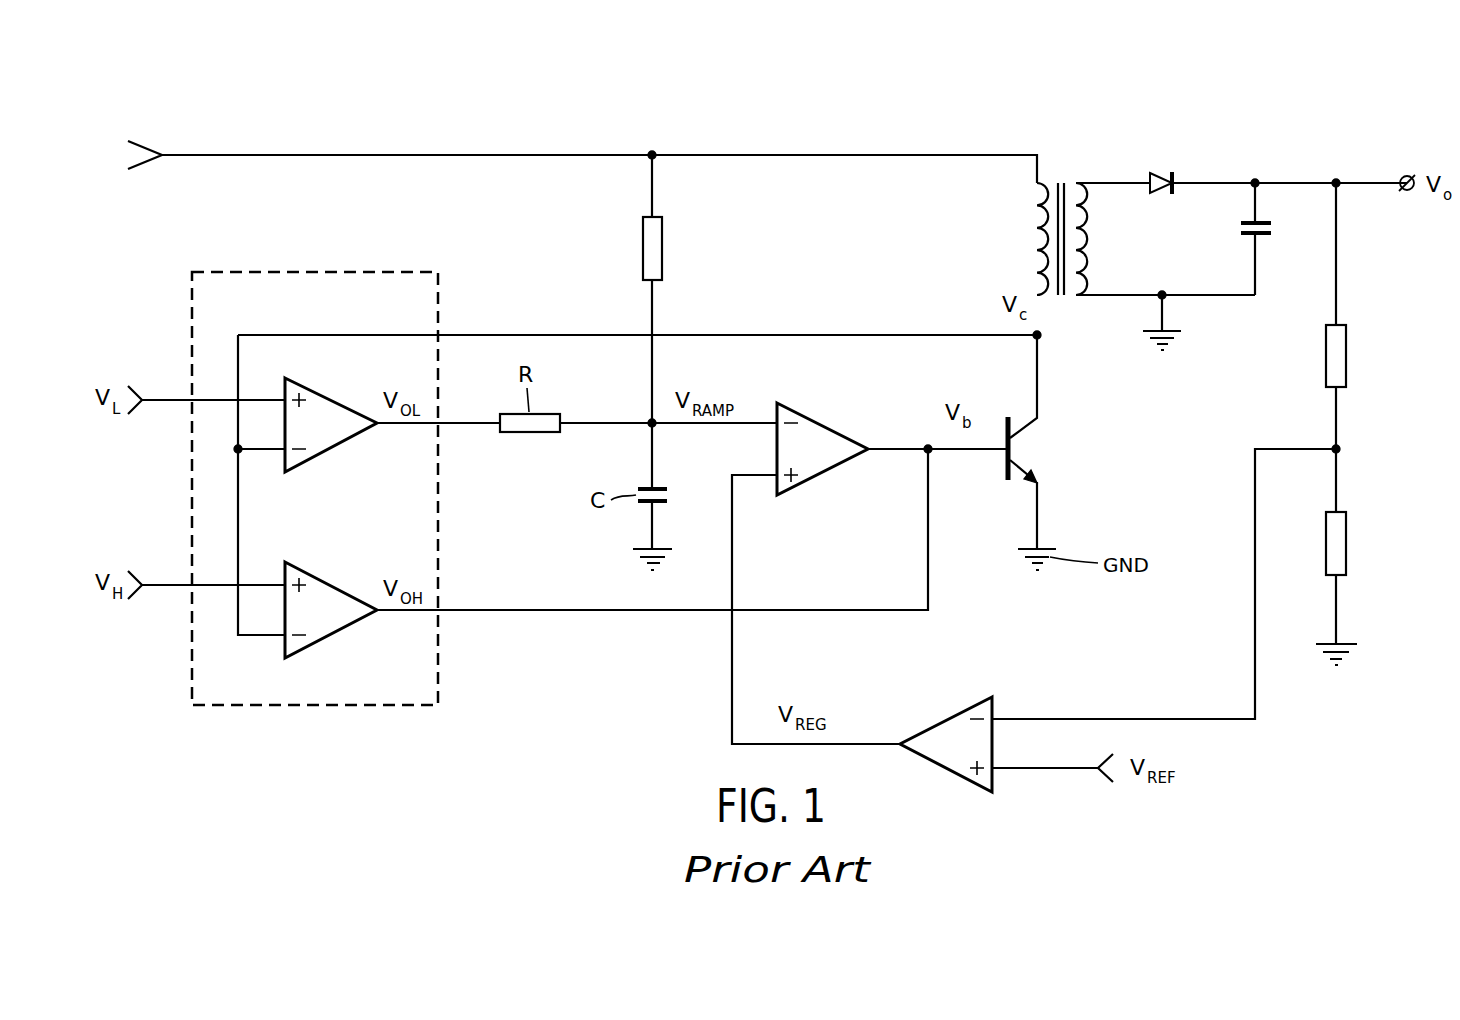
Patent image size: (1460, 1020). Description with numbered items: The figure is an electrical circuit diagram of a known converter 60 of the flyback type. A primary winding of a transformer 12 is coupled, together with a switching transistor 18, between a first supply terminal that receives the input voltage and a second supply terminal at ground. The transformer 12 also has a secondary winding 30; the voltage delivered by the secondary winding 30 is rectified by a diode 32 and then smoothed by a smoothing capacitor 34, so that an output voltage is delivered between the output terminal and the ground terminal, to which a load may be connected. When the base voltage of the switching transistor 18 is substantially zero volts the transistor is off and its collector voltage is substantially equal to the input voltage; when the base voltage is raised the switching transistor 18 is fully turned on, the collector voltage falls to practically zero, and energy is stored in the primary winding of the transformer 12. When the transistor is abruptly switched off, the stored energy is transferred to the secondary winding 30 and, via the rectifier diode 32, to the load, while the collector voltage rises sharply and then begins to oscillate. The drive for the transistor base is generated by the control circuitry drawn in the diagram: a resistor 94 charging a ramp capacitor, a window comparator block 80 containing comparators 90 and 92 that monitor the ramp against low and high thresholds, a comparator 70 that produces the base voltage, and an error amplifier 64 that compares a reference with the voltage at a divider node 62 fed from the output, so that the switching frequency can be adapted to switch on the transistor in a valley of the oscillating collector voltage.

The prior art switching power converter 60 is at (901, 115).
The transformer 12 is at (1090, 186).
The secondary winding 30 is at (1088, 242).
The diode 32 is at (1160, 178).
The smoothing capacitor 34 is at (1266, 240).
The switching transistor 18 is at (1066, 448).
The feedback node / voltage divider 62 is at (1340, 449).
The error amplifier 64 is at (941, 715).
The comparator 70 is at (822, 420).
The window comparator block 80 is at (287, 268).
The low-threshold comparator 90 is at (333, 406).
The high-threshold comparator 92 is at (333, 590).
The charging resistor 94 is at (663, 247).